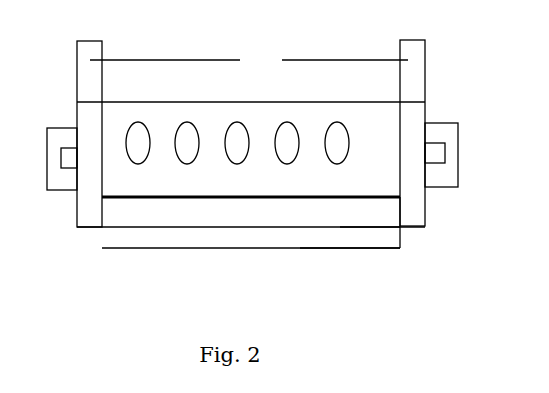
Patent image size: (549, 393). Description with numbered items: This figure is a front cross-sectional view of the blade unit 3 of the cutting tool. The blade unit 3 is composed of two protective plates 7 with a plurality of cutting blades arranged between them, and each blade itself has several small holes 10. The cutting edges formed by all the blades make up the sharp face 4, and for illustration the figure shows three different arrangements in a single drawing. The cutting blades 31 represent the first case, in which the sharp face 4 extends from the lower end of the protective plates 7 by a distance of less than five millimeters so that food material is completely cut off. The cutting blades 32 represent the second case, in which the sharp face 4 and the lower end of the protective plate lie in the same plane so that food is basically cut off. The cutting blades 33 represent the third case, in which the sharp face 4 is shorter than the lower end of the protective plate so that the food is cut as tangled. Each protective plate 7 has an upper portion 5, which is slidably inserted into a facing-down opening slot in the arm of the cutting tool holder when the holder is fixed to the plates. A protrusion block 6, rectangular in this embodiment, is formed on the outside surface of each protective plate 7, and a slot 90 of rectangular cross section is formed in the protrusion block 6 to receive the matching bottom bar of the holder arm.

The blade unit 3 is at (242, 255).
The sharp face 4 is at (230, 198).
The upper portion 5 is at (251, 76).
The protrusion block 6 is at (67, 183).
The protective plate 7 is at (89, 183).
The small holes 10 is at (184, 154).
The cutting blades (first case arrangement) 31 is at (320, 250).
The cutting blades (second case arrangement) 32 is at (350, 228).
The cutting blades (third case arrangement) 33 is at (173, 200).
The slot 90 is at (62, 155).